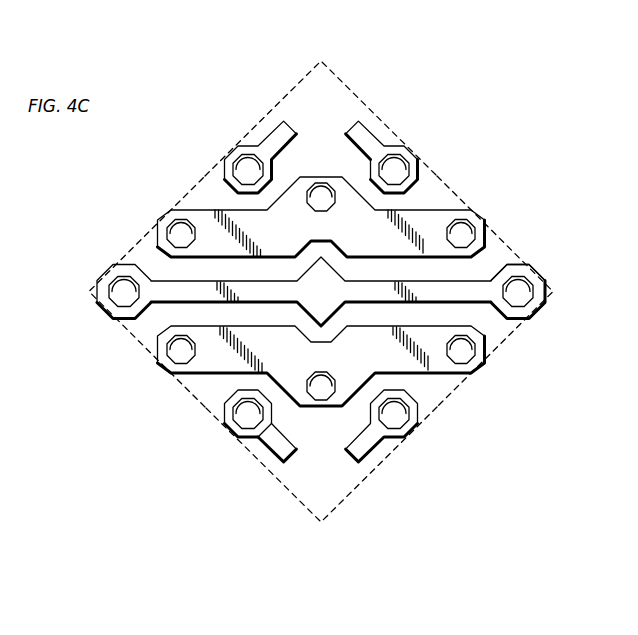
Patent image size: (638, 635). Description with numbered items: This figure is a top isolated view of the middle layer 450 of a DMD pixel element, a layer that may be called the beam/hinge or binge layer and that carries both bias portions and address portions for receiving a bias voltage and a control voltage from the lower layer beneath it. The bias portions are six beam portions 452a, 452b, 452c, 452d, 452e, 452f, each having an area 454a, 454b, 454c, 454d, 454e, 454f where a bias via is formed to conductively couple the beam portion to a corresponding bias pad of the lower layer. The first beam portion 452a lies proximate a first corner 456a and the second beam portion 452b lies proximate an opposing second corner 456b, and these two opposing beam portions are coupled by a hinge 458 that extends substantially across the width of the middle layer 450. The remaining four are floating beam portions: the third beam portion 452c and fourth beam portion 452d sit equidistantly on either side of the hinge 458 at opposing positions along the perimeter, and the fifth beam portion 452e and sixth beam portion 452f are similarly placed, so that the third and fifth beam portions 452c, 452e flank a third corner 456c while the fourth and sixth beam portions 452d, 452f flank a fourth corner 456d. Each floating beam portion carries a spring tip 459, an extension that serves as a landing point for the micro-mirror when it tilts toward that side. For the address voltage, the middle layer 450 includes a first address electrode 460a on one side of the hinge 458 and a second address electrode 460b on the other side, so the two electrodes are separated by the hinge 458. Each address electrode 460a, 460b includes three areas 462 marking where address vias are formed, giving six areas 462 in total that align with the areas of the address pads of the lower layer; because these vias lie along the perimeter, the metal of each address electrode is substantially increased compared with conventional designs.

The middle layer 450 is at (530, 131).
The first beam portion 452a is at (106, 279).
The second beam portion 452b is at (537, 270).
The third beam portion 452c is at (250, 146).
The fourth beam portion 452d is at (247, 447).
The fifth beam portion 452e is at (390, 146).
The sixth beam portion 452f is at (393, 447).
The first area 454a is at (109, 306).
The second area 454b is at (527, 298).
The third area 454c is at (237, 157).
The fourth area 454d is at (242, 437).
The fifth area 454e is at (407, 157).
The sixth area 454f is at (407, 437).
The first corner 456a is at (89, 292).
The second corner 456b is at (553, 292).
The third corner 456c is at (321, 61).
The fourth corner 456d is at (321, 522).
The hinge 458 is at (472, 280).
The spring tip 459 is at (300, 455).
The first address electrode 460a is at (437, 207).
The second address electrode 460b is at (202, 375).
The area 462 is at (170, 215).